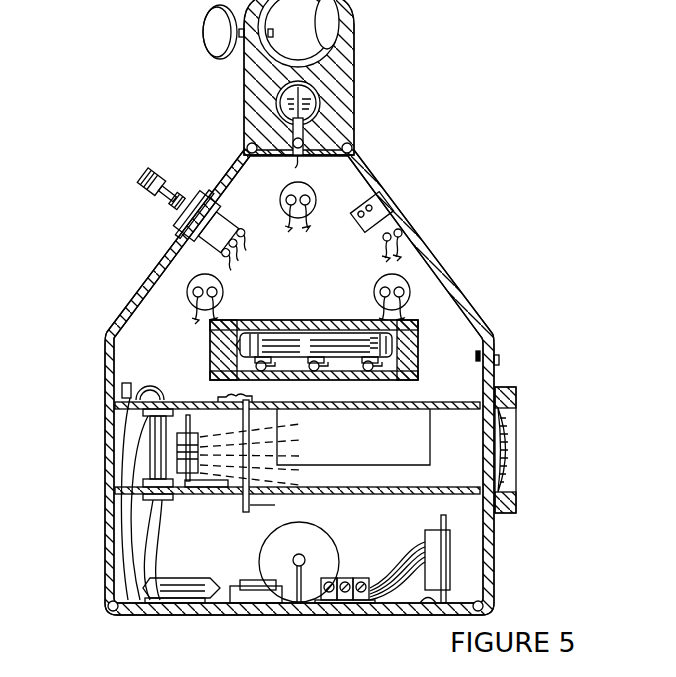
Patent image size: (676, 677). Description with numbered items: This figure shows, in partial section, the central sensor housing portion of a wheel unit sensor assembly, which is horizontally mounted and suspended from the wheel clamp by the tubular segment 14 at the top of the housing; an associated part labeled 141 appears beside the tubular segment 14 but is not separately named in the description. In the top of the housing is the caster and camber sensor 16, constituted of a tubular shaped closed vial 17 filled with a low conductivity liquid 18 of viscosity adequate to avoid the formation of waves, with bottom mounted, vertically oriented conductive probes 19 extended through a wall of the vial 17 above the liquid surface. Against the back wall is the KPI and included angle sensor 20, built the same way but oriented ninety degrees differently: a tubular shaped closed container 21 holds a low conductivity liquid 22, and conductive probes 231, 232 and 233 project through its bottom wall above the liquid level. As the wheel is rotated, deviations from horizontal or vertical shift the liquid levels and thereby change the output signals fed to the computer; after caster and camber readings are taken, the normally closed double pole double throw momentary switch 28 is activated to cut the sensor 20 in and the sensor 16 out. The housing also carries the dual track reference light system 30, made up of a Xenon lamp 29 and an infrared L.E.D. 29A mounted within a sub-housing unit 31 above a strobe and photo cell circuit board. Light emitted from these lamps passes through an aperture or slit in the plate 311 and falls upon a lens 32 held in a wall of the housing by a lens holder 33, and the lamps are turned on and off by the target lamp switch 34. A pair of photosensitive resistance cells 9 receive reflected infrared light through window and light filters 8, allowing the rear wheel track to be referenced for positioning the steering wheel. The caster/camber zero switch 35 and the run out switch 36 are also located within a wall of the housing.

The window and light filters 8 is at (494, 588).
The photosensitive resistance cells 9 is at (445, 560).
The tubular segment 14 is at (326, 39).
The lens cap 141 is at (203, 33).
The caster and camber sensor 16 is at (322, 114).
The vial 17 is at (312, 89).
The liquid 18 is at (284, 90).
The conductive probes 19 is at (300, 90).
The KPI and included angle sensor 20 is at (314, 345).
The tubular shaped closed container 21 is at (328, 316).
The low conductivity liquid 22 is at (242, 320).
The conductive probe 231 is at (268, 372).
The conductive probe 232 is at (330, 366).
The conductive probe 233 is at (378, 366).
The normally closed double pole double throw momentary switch 28 is at (178, 191).
The Xenon lamp 29 is at (150, 440).
The infrared L.E.D. 29A is at (193, 492).
The dual track reference light system 30 is at (184, 400).
The sub-housing unit 31 is at (210, 402).
The plate 311 is at (250, 506).
The lens 32 is at (508, 437).
The lens holder 33 is at (505, 514).
The target lamp switch 34 is at (410, 290).
The caster/camber zero switch 35 is at (195, 279).
The run out switch 36 is at (316, 198).